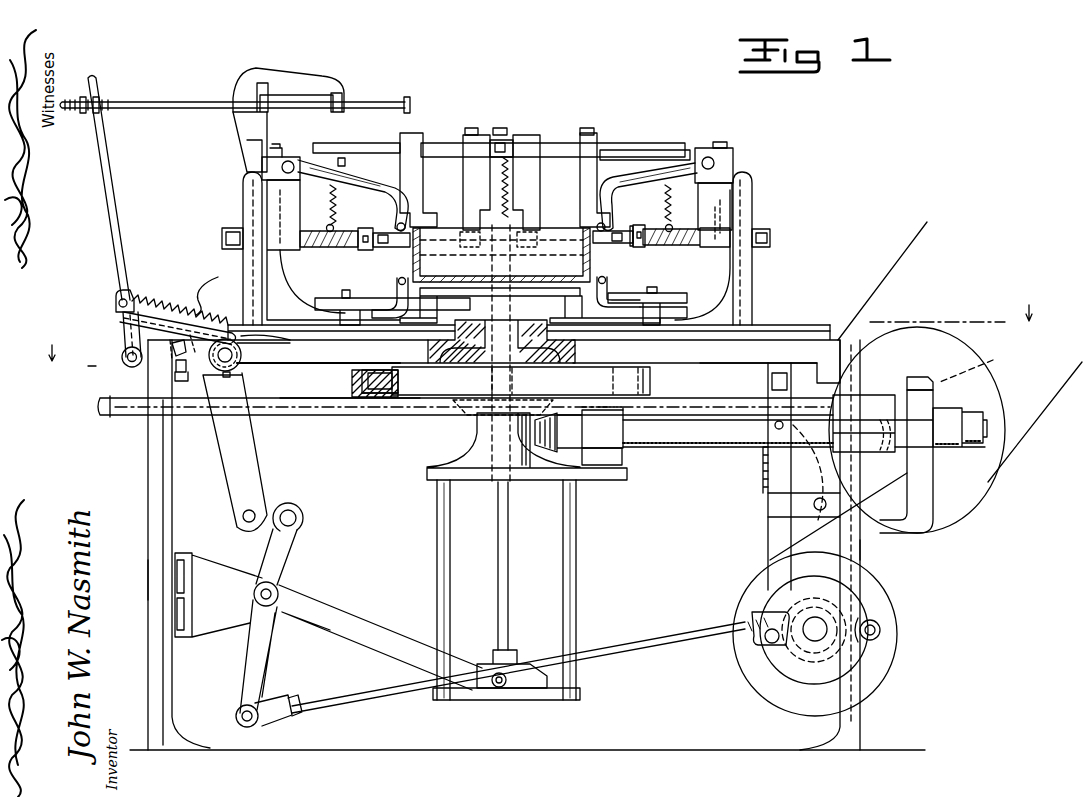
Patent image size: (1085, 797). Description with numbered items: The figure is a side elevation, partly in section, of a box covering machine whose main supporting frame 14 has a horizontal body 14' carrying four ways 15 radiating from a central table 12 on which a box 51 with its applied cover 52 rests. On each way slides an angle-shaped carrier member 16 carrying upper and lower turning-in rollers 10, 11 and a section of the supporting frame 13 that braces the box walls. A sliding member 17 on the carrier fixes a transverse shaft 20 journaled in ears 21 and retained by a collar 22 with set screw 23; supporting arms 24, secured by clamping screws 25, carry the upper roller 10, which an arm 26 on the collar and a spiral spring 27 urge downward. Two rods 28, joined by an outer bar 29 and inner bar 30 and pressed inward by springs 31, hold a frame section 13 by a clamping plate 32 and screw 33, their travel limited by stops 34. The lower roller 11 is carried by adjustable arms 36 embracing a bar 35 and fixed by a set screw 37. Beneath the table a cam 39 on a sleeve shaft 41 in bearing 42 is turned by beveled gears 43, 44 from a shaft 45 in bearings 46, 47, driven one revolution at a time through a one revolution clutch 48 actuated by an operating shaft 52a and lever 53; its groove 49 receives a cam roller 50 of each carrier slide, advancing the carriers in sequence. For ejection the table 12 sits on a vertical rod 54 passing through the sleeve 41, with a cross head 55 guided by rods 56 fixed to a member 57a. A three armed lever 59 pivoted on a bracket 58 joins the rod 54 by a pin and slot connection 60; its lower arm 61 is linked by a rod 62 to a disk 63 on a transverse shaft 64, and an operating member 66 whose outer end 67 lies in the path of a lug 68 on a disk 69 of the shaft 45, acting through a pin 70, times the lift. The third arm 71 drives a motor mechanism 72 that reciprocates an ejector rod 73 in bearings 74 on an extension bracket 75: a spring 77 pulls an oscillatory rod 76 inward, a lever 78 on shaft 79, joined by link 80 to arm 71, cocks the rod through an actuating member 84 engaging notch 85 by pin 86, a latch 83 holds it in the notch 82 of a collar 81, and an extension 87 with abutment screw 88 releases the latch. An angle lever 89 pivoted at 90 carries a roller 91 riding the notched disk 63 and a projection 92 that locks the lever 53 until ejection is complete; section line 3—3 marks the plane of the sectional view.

The section line 3— 3 is at (565, 391).
The upper turning-in tool 10 is at (395, 225).
The lower turning-in tool 11 is at (398, 282).
The table 12 is at (501, 249).
The supporting frame 13 is at (345, 247).
The main supporting frame 14 is at (463, 428).
The main body of the frame 14' is at (494, 354).
The ways 15 is at (233, 322).
The carrier member 16 is at (287, 283).
The sliding member 17 is at (284, 192).
The shaft 20 is at (292, 160).
The spaced ears 21 is at (484, 140).
The collar 22 is at (505, 140).
The set screw 23 is at (496, 130).
The supporting arms 24 is at (425, 205).
The clamping screws 25 is at (278, 147).
The inwardly extending arm 26 is at (340, 160).
The spiral spring 27 is at (338, 205).
The rods 28 is at (340, 250).
The bar 29 is at (226, 233).
The bar 30 is at (628, 247).
The springs 31 is at (320, 246).
The clamping plate 32 is at (380, 233).
The screw 33 is at (640, 226).
The stops 34 is at (243, 196).
The bar 35 is at (320, 305).
The adjustable arms 36 is at (392, 312).
The set screw 37 is at (343, 292).
The cam 39 is at (350, 382).
The sleeve shaft 41 is at (515, 378).
The bearing 42 is at (512, 344).
The beveled gear 43 is at (466, 407).
The beveled gear 44 is at (579, 429).
The shaft 45 is at (695, 432).
The bearing 46 is at (623, 452).
The bearing 47 is at (852, 423).
The one revolution clutch 48 is at (906, 437).
The cam groove 49 is at (362, 396).
The cam roller 50 is at (398, 381).
The box 51 is at (422, 262).
The cover 52 is at (368, 265).
The operating shaft 52a is at (293, 408).
The operating lever 53 is at (993, 360).
The vertically reciprocable rod 54 is at (508, 590).
The cross head 55 is at (493, 698).
The guide rods 56 is at (446, 603).
The member 57a is at (428, 476).
The bracket 58 is at (218, 595).
The three armed lever 59 is at (318, 628).
The pin and slot connection 60 is at (512, 686).
The lower arm 61 is at (242, 690).
The rod 62 is at (655, 640).
The disk 63 is at (815, 634).
The transverse shaft 64 is at (858, 630).
The operating member 66 is at (760, 612).
The outer end 67 is at (768, 475).
The lug 68 is at (812, 366).
The disk 69 is at (768, 452).
The pin 70 is at (798, 448).
The third arm 71 is at (272, 553).
The motor mechanism 72 is at (114, 312).
The horizontally positioned rod 73 is at (182, 103).
The bearings 74 is at (340, 95).
The extension bracket 75 is at (247, 137).
The oscillatory rod 76 is at (104, 234).
The spring 77 is at (158, 297).
The lever 78 is at (258, 463).
The shaft 79 is at (241, 354).
The link 80 is at (278, 515).
The adjustable collar 81 is at (240, 366).
The notch and shoulder 82 is at (274, 344).
The latch member 83 is at (135, 328).
The actuating member 84 is at (180, 305).
The notch 85 is at (217, 288).
The pin 86 is at (183, 346).
The lateral extension 87 is at (200, 380).
The abutment screw 88 is at (185, 350).
The angle lever 89 is at (906, 461).
The pivot 90 is at (814, 505).
The anti-friction roller 91 is at (878, 622).
The projecting portion 92 is at (920, 383).